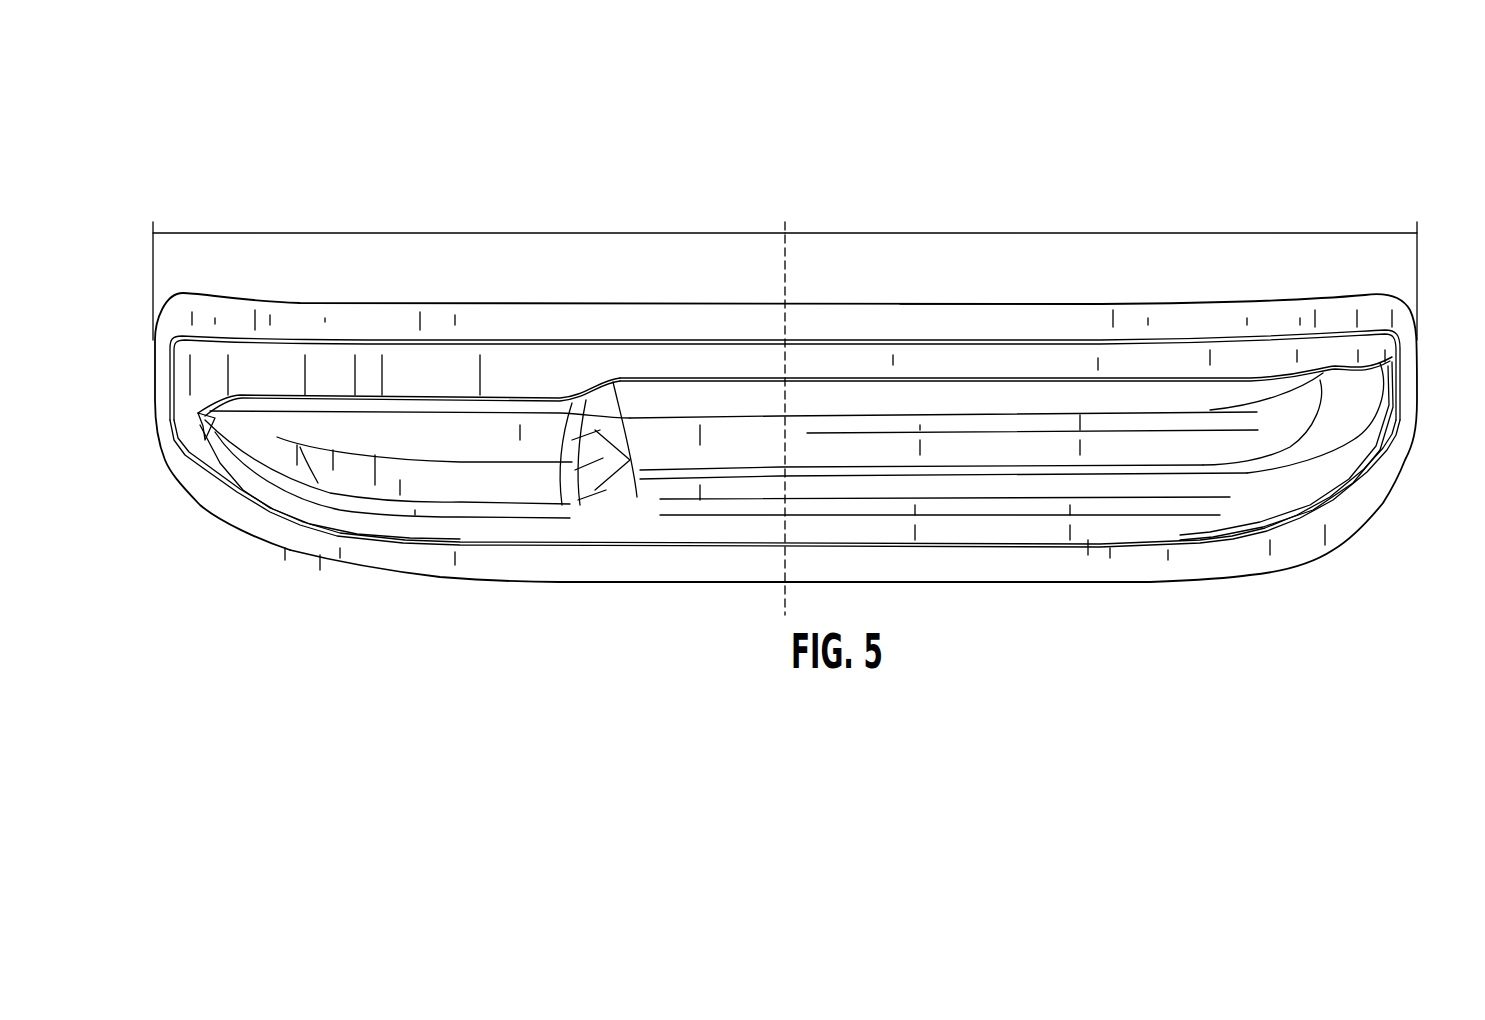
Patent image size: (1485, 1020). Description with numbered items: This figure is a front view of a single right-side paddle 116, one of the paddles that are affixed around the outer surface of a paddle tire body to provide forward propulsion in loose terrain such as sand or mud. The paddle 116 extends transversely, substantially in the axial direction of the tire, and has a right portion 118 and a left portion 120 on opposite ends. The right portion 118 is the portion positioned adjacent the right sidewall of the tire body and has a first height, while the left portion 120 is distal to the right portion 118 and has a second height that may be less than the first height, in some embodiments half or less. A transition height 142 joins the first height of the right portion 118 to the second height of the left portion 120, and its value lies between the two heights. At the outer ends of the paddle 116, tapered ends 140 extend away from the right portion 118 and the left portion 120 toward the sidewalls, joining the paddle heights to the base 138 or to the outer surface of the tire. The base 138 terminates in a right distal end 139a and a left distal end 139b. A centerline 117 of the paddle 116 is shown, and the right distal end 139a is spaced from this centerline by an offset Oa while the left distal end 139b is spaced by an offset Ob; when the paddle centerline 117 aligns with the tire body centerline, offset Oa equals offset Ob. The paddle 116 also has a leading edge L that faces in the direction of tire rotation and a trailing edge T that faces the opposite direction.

The right-side paddle 116 is at (548, 157).
The centerline 117 is at (785, 278).
The right portion 118 is at (1187, 417).
The left portion 120 is at (399, 425).
The base 138 is at (1338, 322).
The right distal end 139a is at (1420, 340).
The left distal end 139b is at (152, 348).
The tapered ends 140 is at (217, 427).
The transition height 142 is at (583, 423).
The offset Ob is at (483, 233).
The offset Oa is at (1120, 233).
The leading edge L is at (1050, 303).
The trailing edge T is at (1017, 582).